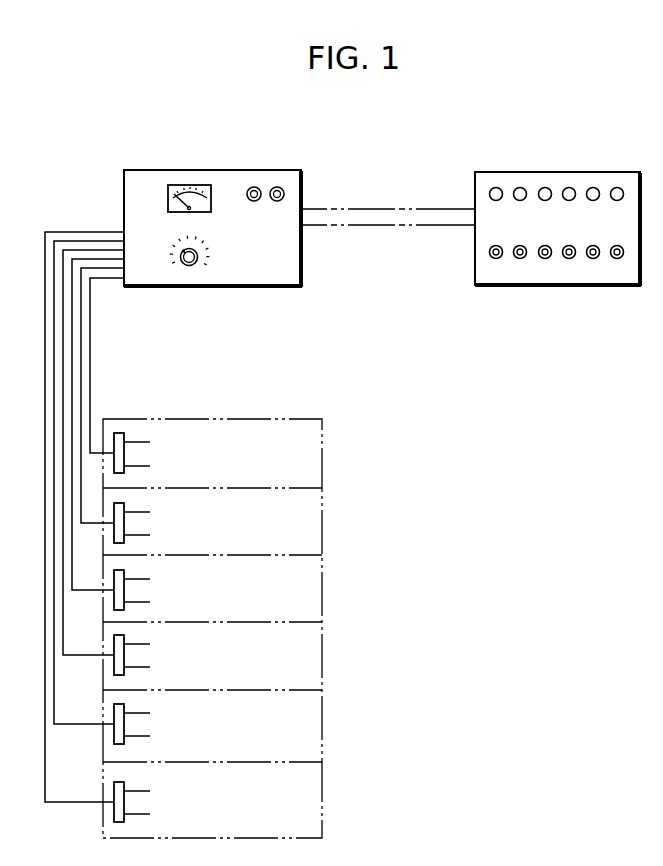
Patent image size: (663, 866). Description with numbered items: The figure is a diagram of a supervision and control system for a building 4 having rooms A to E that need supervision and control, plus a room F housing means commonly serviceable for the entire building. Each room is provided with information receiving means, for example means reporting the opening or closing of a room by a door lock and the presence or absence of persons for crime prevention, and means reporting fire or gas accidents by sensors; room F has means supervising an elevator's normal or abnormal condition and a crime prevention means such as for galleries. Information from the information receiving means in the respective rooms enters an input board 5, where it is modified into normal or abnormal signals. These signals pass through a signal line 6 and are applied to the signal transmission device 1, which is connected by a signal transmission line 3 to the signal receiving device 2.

The signal transmission device 1 is at (226, 170).
The signal receiving device 2 is at (573, 172).
The signal transmission line 3 is at (389, 225).
The building 4 is at (240, 419).
The input board 5 is at (121, 433).
The signal line 6 is at (45, 358).